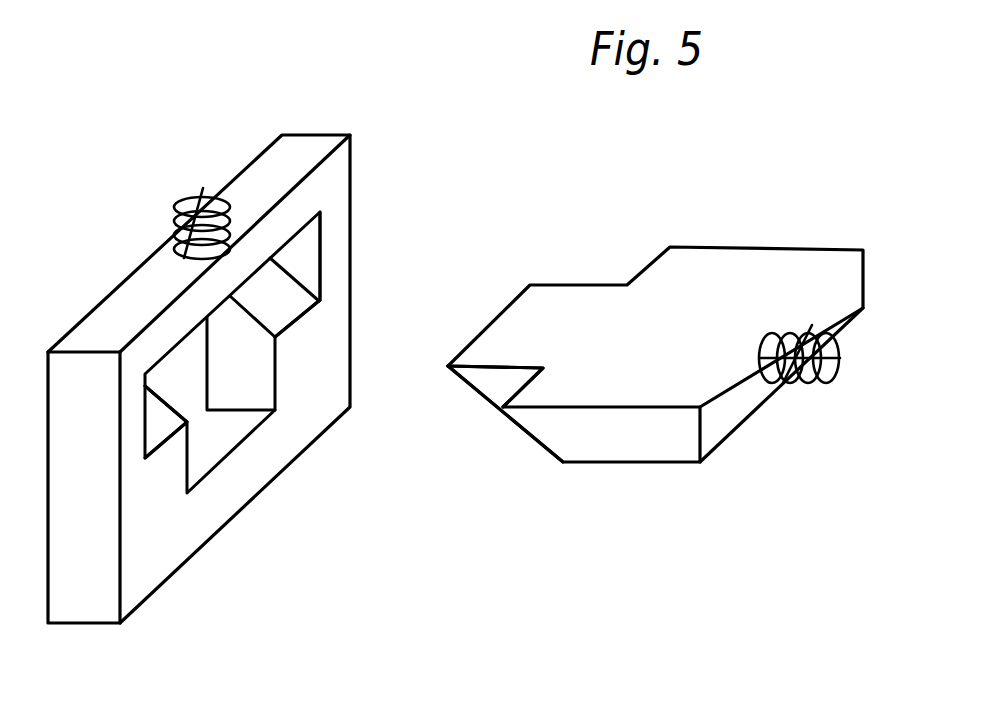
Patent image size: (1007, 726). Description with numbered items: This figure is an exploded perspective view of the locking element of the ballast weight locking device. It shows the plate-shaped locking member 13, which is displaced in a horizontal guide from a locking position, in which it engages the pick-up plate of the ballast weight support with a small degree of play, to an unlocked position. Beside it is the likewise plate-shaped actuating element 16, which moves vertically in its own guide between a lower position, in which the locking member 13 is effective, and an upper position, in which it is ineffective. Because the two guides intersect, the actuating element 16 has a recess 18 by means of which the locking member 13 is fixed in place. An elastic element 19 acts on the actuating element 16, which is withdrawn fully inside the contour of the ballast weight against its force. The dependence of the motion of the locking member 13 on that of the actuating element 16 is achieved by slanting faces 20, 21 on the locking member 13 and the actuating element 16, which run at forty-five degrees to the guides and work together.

The locking member 13 is at (733, 259).
The actuating element 16 is at (314, 141).
The recess 18 is at (184, 400).
The elastic element 19 is at (186, 198).
The slanting face 20 is at (533, 440).
The slanting face 21 is at (282, 295).